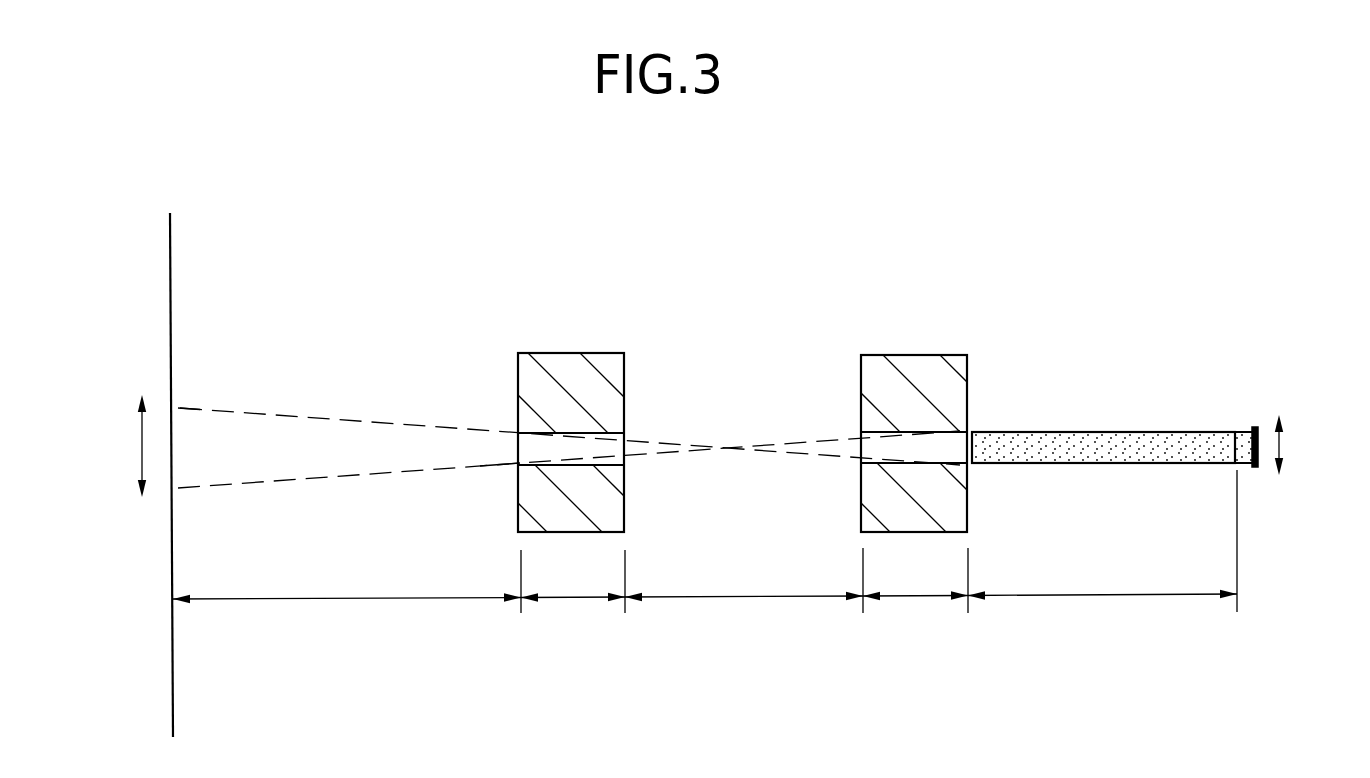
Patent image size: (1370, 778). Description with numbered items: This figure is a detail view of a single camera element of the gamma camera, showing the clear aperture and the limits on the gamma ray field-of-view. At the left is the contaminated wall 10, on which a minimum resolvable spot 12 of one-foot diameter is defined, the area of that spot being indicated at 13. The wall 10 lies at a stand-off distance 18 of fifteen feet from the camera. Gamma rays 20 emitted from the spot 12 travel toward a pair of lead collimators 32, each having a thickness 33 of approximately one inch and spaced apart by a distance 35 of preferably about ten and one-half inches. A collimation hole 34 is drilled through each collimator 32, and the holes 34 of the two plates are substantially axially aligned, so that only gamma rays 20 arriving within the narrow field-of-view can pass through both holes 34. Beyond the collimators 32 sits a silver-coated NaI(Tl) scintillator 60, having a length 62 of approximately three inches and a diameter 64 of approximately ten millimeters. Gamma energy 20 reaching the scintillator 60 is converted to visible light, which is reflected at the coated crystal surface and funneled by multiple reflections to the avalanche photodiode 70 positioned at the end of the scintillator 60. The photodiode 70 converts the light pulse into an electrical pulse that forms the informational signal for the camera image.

The wall 10 is at (194, 221).
The minimum resolvable spot 12 is at (190, 406).
The resolution area 13 is at (142, 444).
The stand-off distance 18 is at (345, 600).
The gamma ray 20 is at (383, 421).
The lead collimator 32 is at (891, 348).
The collimator thickness 33 is at (572, 600).
The collimation hole 34 is at (506, 470).
The collimator spacing 35 is at (765, 600).
The scintillator 60 is at (1055, 425).
The scintillator length 62 is at (1105, 595).
The scintillator diameter 64 is at (1279, 445).
The avalanche photodiode 70 is at (1243, 425).